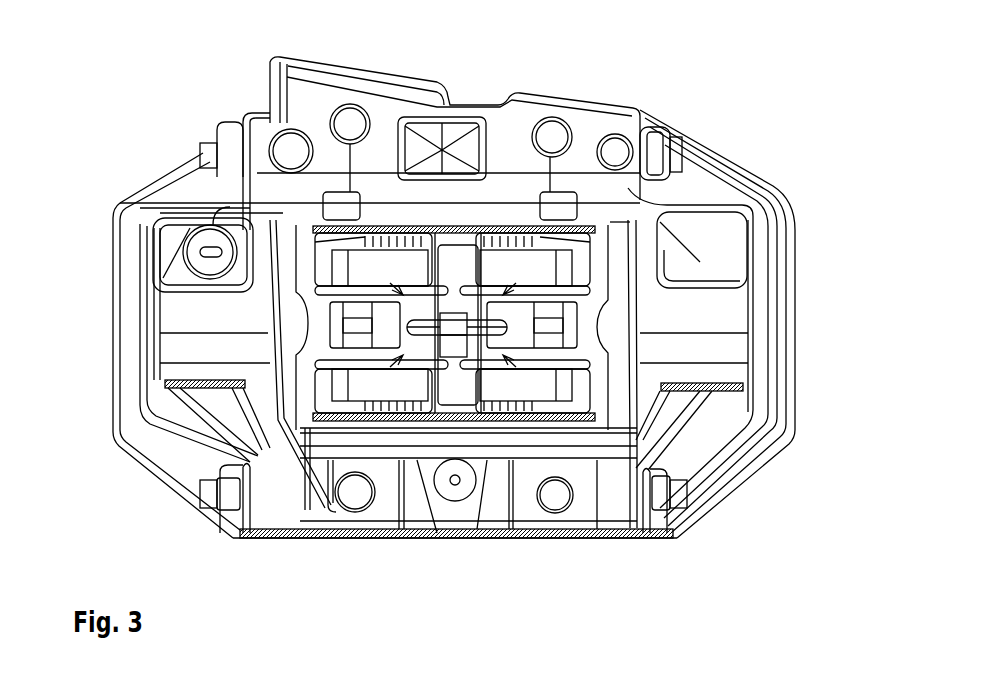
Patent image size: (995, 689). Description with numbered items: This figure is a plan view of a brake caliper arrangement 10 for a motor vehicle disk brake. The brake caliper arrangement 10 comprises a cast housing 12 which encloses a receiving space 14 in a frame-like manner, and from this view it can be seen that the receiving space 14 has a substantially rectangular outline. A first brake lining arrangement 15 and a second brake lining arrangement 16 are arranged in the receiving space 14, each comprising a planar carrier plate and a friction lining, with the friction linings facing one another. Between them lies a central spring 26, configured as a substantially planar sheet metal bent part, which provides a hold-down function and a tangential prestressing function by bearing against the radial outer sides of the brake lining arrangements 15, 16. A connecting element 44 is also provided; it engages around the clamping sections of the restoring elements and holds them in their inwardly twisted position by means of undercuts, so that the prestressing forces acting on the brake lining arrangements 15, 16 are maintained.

The brake caliper arrangement 10 is at (764, 150).
The housing 12 is at (130, 405).
The receiving space 14 is at (310, 327).
The first brake lining arrangement 15 is at (513, 455).
The second brake lining arrangement 16 is at (572, 225).
The central spring 26 is at (472, 228).
The connecting element 44 is at (460, 326).